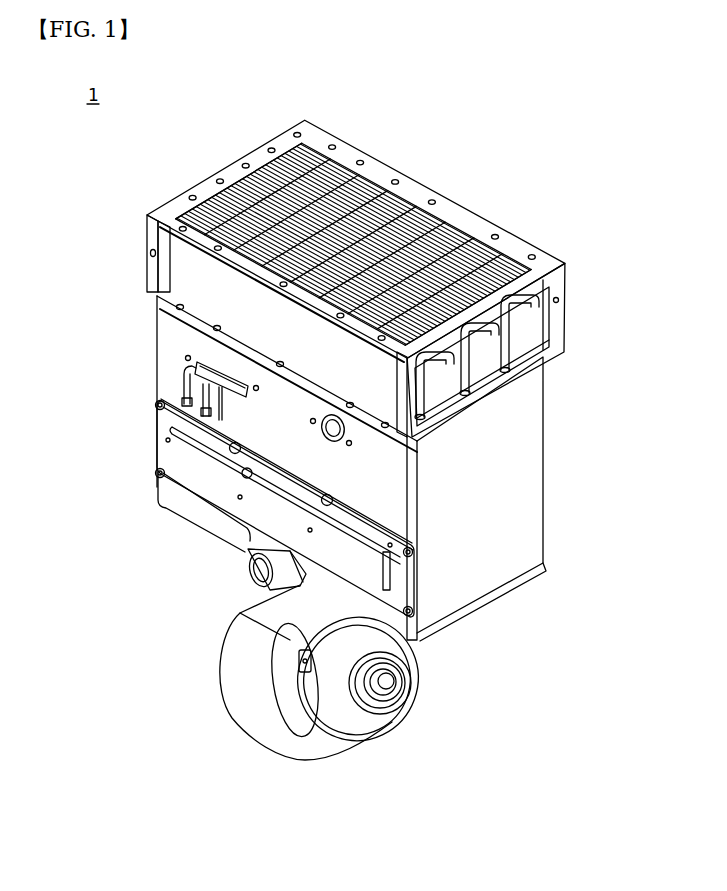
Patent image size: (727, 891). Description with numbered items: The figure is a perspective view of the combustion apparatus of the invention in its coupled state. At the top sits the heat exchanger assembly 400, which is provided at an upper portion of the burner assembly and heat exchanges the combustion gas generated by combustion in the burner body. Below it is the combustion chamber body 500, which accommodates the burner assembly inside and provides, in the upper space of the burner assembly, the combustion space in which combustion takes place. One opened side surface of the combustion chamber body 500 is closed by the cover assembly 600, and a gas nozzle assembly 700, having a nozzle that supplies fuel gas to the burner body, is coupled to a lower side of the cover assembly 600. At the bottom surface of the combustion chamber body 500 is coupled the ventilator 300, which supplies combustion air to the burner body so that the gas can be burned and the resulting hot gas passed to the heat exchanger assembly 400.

The ventilator 300 is at (423, 673).
The heat exchanger assembly 400 is at (562, 293).
The combustion chamber body 500 is at (535, 437).
The cover assembly 600 is at (405, 499).
The gas nozzle assembly 700 is at (403, 580).